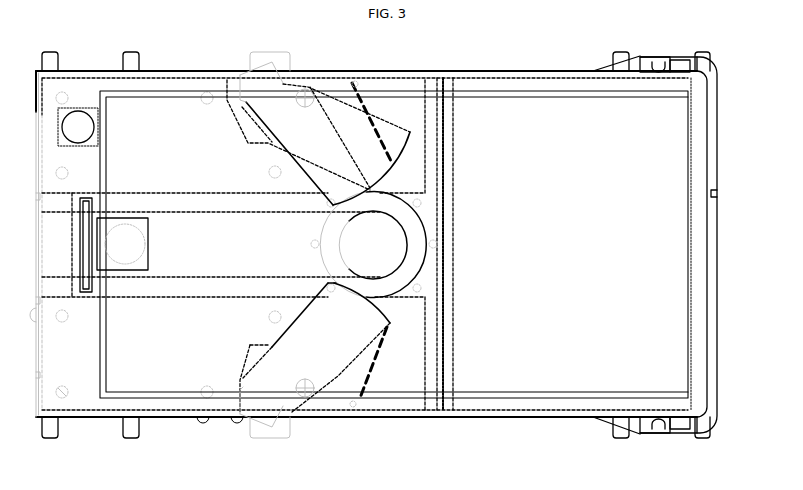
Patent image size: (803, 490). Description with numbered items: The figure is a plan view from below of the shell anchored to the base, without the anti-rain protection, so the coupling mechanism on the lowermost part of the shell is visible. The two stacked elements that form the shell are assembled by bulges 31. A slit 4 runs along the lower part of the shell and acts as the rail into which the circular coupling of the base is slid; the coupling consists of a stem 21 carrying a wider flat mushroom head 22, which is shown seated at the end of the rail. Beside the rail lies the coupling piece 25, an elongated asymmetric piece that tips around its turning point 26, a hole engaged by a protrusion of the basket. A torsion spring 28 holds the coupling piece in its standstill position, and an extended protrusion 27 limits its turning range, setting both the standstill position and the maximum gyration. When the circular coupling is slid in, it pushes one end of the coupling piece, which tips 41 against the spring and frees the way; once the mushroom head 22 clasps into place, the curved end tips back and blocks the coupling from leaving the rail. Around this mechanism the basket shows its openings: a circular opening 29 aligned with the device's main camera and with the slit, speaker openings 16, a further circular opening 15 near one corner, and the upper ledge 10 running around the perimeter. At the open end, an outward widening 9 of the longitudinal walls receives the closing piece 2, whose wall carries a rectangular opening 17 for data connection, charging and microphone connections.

The closing piece 2 is at (718, 153).
The slit 4 is at (215, 250).
The outward widening 9 is at (640, 53).
The ledge 10 is at (495, 83).
The opening 15 is at (77, 117).
The speaker opening 16 is at (93, 200).
The rectangular opening 17 is at (717, 245).
The stem 21 is at (392, 248).
The mushroom head 22 is at (417, 227).
The coupling piece 25 is at (315, 368).
The turning point 26 is at (295, 397).
The extended protrusion 27 is at (265, 348).
The torsion spring 28 is at (380, 358).
The circular opening 29 is at (127, 233).
The bulges 31 is at (62, 392).
The tipping of the coupling piece 41 is at (400, 118).